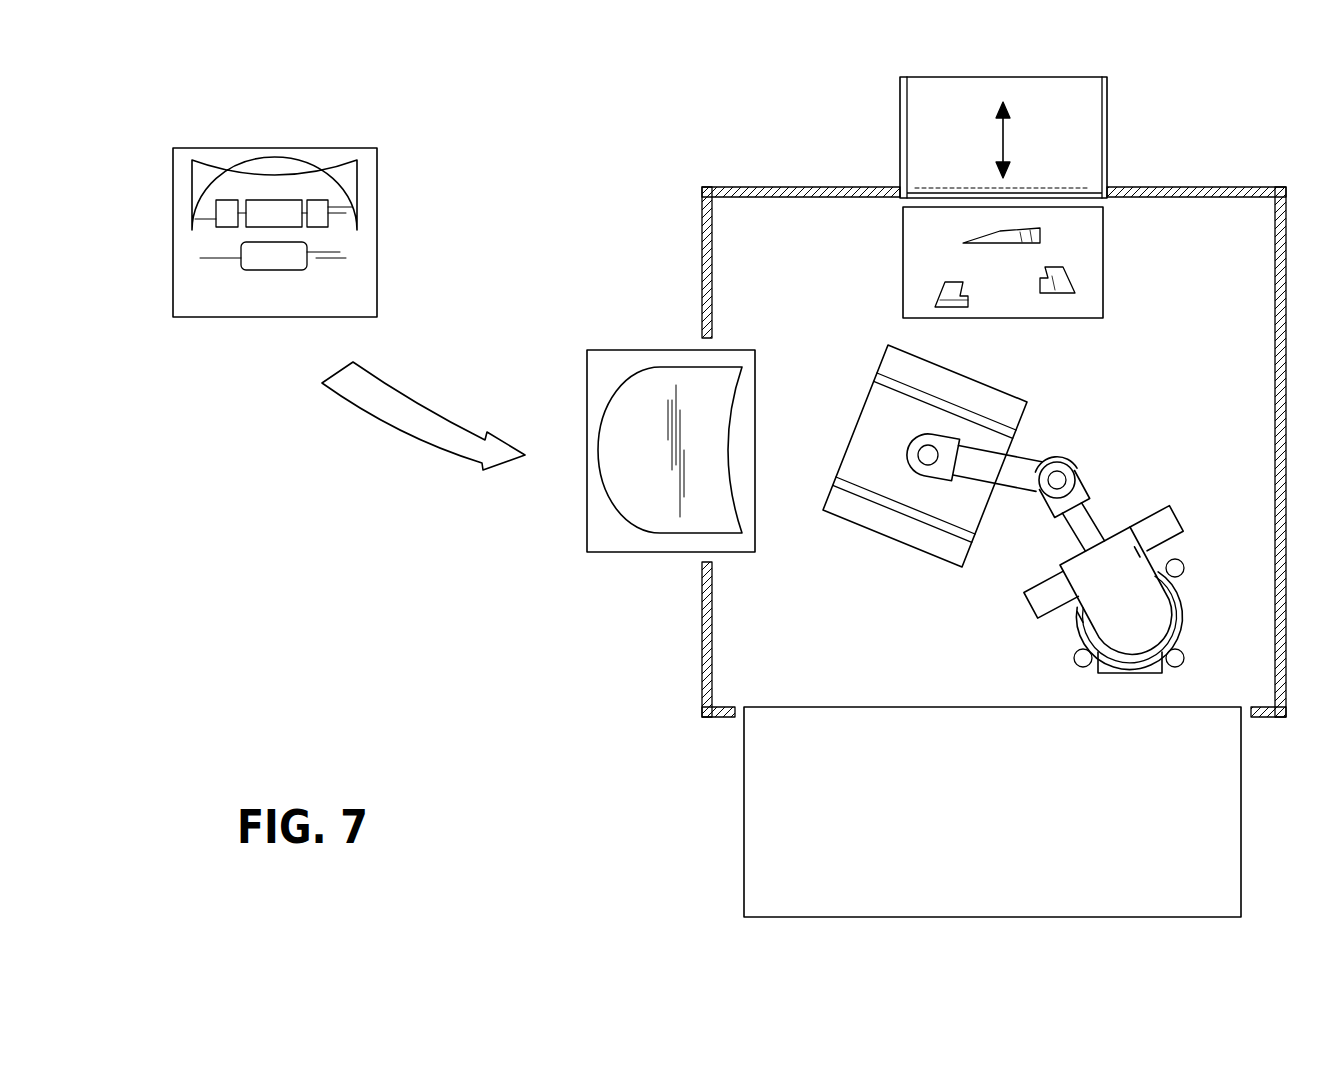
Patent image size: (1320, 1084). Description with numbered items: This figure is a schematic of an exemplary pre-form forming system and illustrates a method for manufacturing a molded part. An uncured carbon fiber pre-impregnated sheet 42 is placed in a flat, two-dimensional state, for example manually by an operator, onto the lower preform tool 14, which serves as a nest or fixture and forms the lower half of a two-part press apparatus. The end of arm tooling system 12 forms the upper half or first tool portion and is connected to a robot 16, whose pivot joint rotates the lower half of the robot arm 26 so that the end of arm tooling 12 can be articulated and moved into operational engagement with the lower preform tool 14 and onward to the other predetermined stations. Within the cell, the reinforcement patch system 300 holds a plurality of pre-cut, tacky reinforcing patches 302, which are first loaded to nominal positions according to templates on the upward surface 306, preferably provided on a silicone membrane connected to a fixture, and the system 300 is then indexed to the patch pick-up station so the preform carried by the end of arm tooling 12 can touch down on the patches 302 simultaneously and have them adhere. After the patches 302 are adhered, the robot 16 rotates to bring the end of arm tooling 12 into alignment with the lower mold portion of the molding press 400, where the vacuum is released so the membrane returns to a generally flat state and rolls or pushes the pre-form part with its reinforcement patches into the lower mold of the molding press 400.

The lower preform tool system 14 is at (160, 172).
The uncured carbon fiber pre-impregnated sheet 42 is at (660, 398).
The end of arm tooling system 12 is at (857, 392).
The lower half of the robot arm 26 is at (1017, 470).
The robot 16 is at (1197, 525).
The reinforcement patch system 300 is at (895, 270).
The reinforcing patch 302 is at (1012, 236).
The upward surface 306 is at (930, 232).
The molding press 400 is at (795, 798).